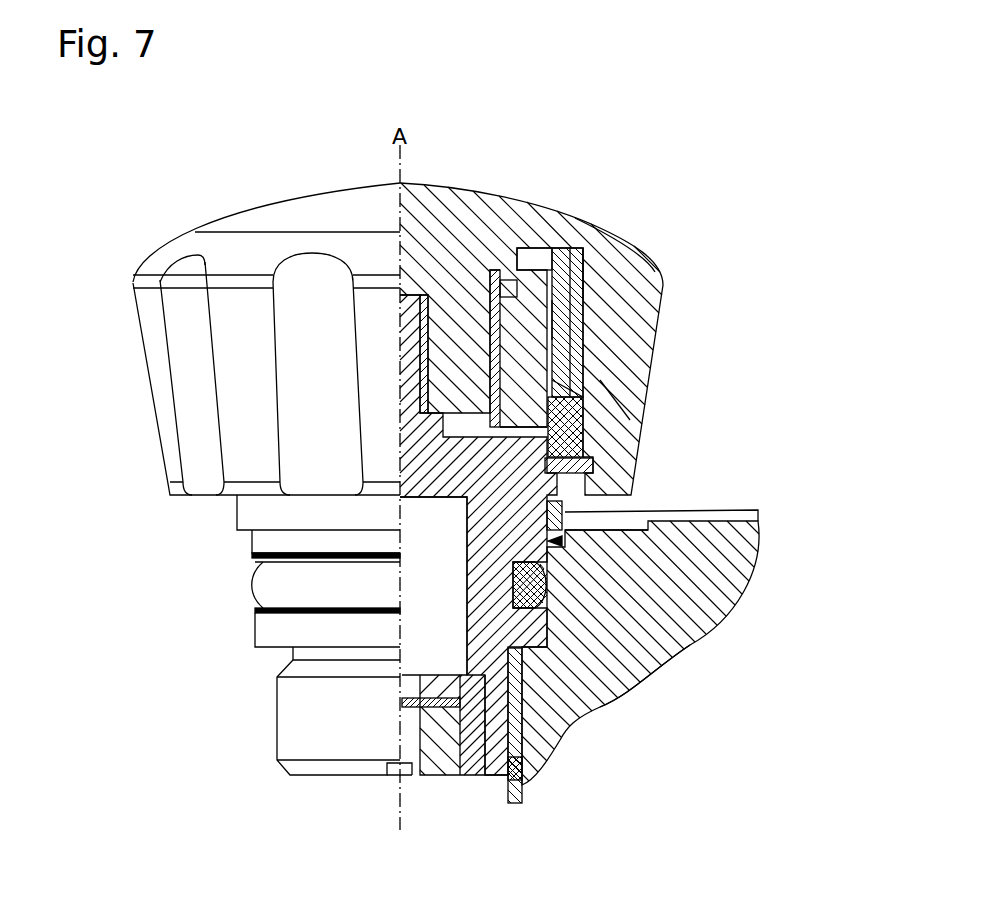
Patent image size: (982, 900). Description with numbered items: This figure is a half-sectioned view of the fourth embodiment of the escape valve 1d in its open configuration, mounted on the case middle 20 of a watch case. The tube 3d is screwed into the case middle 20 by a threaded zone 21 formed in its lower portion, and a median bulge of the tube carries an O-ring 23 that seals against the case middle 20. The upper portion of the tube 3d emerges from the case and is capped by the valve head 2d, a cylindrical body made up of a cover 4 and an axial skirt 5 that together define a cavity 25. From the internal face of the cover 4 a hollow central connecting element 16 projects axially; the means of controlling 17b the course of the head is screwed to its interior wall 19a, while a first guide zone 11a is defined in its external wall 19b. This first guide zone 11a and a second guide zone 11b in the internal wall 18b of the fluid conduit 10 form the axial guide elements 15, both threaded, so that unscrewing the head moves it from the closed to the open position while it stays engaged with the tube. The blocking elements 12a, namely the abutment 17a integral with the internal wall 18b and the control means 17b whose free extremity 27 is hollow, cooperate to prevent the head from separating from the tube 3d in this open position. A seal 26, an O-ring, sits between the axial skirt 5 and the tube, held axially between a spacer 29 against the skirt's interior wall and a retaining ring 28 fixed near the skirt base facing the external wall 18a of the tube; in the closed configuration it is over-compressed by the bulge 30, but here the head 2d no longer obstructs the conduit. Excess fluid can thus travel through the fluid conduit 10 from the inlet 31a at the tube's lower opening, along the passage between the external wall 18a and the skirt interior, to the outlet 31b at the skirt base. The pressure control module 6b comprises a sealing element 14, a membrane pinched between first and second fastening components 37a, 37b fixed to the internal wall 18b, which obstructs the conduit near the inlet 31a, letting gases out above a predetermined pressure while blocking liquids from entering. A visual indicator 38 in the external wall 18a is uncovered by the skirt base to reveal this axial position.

The escape valve 1d is at (162, 808).
The valve head 2d is at (208, 226).
The cover 4 is at (271, 222).
The axial skirt 5 is at (622, 410).
The tube 3d is at (578, 495).
The pressure control module 6b is at (583, 734).
The fluid conduit 10 is at (430, 548).
The first guide zone 11a is at (558, 362).
The second guide zone 11b is at (560, 380).
The blocking elements 12a is at (275, 361).
The sealing element 14 is at (442, 738).
The axial guide elements 15 is at (661, 322).
The central connecting element 16 is at (562, 400).
The abutment 17a is at (450, 443).
The means of controlling the course of the valve head 17b is at (508, 432).
The external wall of the tube 18a is at (575, 318).
The internal wall of the fluid conduit 18b is at (430, 575).
The interior wall of the central connecting element 19a is at (420, 297).
The external wall of the central connecting element 19b is at (513, 290).
The case middle 20 is at (655, 640).
The threaded zone 21 is at (516, 772).
The O-ring 23 is at (550, 592).
The cavity 25 is at (530, 252).
The seal 26 is at (568, 437).
The free extremity 27 is at (403, 498).
The retaining ring 28 is at (590, 463).
The spacer 29 is at (585, 282).
The bulge 30 is at (760, 511).
The inlet 31a is at (412, 773).
The outlet 31b is at (620, 488).
The first fastening component 37a is at (453, 690).
The second fastening component 37b is at (522, 768).
The visual indicator 38 is at (564, 541).